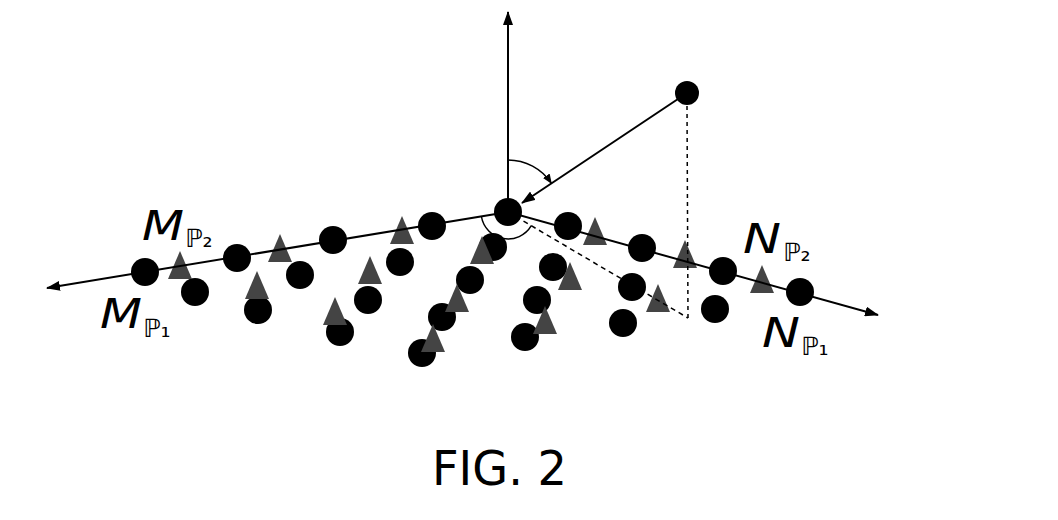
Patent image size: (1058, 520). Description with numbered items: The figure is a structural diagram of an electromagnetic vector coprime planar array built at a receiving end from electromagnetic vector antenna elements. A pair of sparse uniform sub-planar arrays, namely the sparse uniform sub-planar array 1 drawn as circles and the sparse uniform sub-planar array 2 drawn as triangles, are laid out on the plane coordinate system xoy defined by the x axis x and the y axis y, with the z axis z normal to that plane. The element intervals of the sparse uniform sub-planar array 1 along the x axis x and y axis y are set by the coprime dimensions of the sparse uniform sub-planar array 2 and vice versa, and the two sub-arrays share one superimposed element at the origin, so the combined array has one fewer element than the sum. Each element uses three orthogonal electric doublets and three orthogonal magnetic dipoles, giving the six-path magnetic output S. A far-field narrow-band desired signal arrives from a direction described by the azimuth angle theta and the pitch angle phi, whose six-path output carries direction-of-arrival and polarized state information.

The sparse uniform sub-planar array P1 1 is at (438, 193).
The sparse uniform sub-planar array P2 2 is at (78, 78).
The x axis x is at (277, 250).
The y axis y is at (693, 263).
The z axis z is at (492, 110).
The six-path magnetic output S is at (745, 110).
The pitch angle phi is at (530, 156).
The azimuth angle theta is at (506, 247).